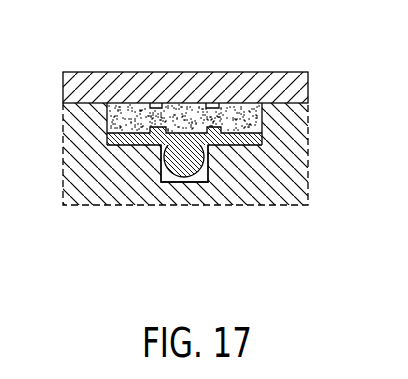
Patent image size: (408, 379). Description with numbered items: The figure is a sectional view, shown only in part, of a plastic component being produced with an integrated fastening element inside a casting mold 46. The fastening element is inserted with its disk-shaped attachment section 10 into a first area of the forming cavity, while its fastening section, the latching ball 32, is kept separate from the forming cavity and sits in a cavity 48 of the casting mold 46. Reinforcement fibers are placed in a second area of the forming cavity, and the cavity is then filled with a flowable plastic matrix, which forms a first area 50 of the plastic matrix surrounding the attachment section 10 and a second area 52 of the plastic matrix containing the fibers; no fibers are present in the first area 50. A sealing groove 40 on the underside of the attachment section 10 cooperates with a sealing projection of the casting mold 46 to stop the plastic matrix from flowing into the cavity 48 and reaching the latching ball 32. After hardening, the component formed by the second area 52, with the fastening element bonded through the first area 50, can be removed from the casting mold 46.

The attachment section 10 is at (216, 137).
The latching ball 32 is at (190, 174).
The sealing groove 40 is at (132, 146).
The casting mold 46 is at (297, 156).
The cavity 48 is at (165, 182).
The first area of the plastic matrix 50 is at (243, 105).
The second area of the plastic matrix 52 is at (152, 74).